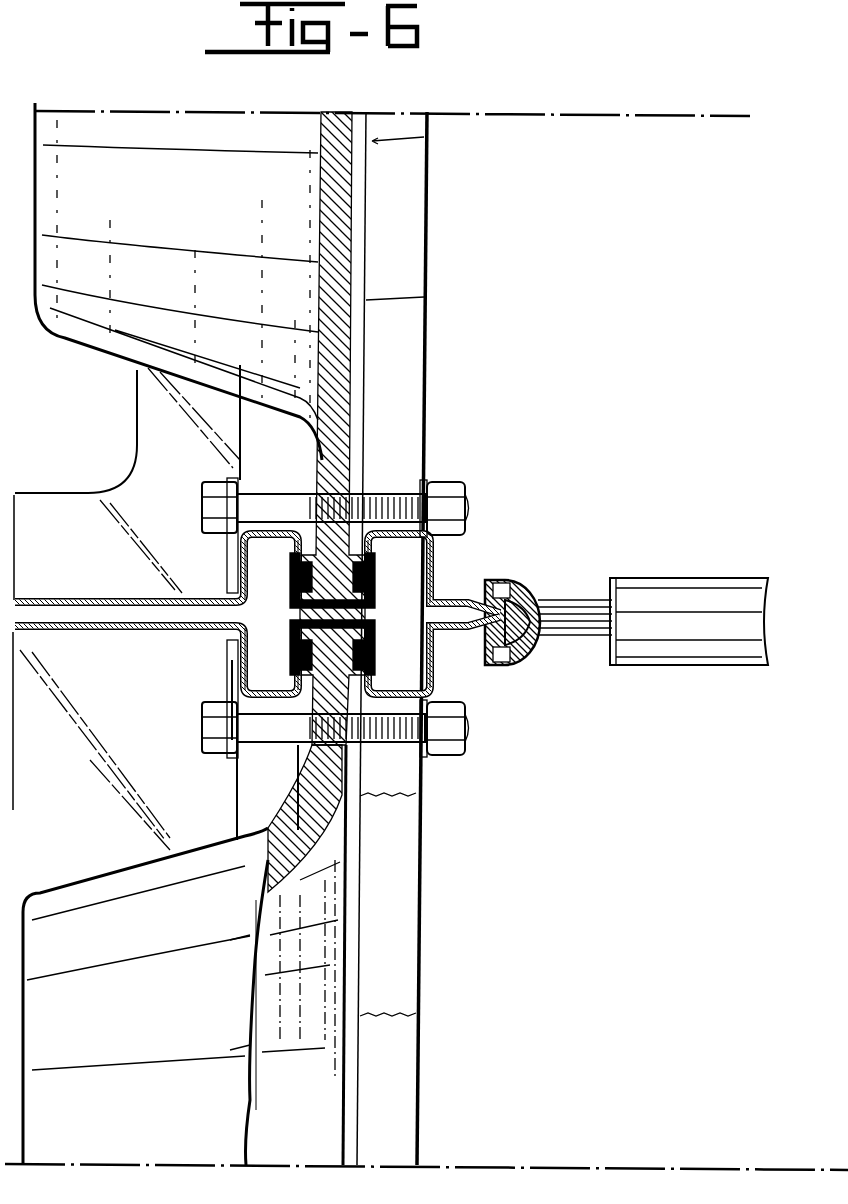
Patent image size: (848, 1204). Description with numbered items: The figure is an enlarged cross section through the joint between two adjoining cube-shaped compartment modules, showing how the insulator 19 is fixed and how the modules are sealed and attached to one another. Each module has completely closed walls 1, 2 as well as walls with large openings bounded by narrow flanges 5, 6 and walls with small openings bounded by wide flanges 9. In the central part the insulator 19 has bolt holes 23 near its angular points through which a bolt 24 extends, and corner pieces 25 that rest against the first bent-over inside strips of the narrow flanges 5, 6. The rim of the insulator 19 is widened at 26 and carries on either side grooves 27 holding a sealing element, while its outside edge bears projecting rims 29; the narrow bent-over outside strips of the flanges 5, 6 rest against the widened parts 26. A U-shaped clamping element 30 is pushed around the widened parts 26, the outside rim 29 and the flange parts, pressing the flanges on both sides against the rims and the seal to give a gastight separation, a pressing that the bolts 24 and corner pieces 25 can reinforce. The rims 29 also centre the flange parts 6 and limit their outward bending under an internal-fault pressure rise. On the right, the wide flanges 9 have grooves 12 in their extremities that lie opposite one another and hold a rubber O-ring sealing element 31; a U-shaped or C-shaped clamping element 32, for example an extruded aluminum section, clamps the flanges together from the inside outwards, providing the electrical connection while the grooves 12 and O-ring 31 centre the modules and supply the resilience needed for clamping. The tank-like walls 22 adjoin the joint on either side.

The completely closed wall 1 is at (75, 632).
The completely closed wall 2 is at (80, 600).
The narrow flange 5 is at (395, 562).
The narrow flange 6 is at (240, 565).
The wide flange 9 is at (452, 600).
The groove 12 is at (575, 640).
The insulator 19 is at (325, 138).
The tank wall 22 is at (85, 330).
The bolt hole 23 is at (350, 450).
The bolt 24 is at (388, 490).
The corner piece 25 is at (432, 490).
The widened part of the insulator rim 26 is at (375, 620).
The groove 27 is at (240, 680).
The projecting rim 29 is at (368, 650).
The U-shaped clamping element 30 is at (292, 606).
The sealing element 31 is at (528, 600).
The U-shaped or C-shaped clamping element 32 is at (715, 590).